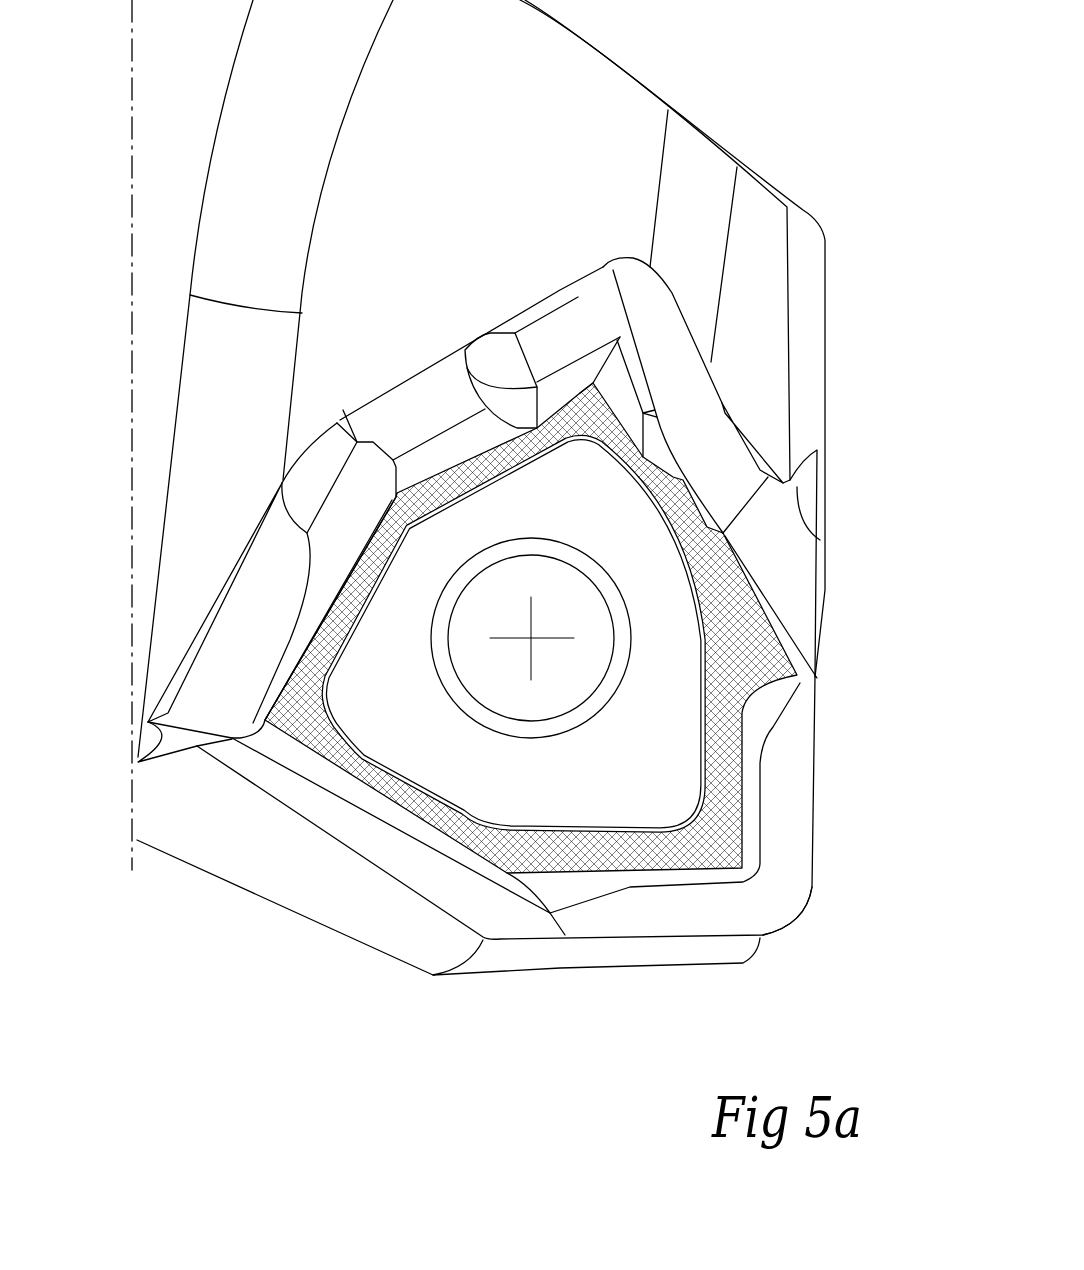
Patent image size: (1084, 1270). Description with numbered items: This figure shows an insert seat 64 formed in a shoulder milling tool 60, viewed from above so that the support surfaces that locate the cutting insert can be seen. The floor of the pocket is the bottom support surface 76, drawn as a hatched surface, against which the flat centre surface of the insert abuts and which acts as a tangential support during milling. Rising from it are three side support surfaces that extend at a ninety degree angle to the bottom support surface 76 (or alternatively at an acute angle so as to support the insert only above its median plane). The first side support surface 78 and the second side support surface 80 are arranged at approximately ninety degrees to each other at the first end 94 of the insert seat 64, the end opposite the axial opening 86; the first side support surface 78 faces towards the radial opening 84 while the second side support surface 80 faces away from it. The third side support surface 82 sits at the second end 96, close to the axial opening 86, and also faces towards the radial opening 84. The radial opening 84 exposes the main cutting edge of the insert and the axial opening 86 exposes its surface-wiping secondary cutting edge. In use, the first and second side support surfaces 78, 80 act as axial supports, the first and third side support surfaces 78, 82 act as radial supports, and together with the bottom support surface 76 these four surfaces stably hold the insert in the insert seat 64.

The shoulder milling tool 60 is at (764, 122).
The insert seat 64 is at (352, 804).
The bottom support surface 76 is at (720, 659).
The first side support surface 78 is at (548, 333).
The second side support surface 80 is at (740, 447).
The third side support surface 82 is at (210, 661).
The radial opening 84 is at (843, 455).
The axial opening 86 is at (813, 990).
The first end 94 is at (672, 309).
The second end 96 is at (192, 748).